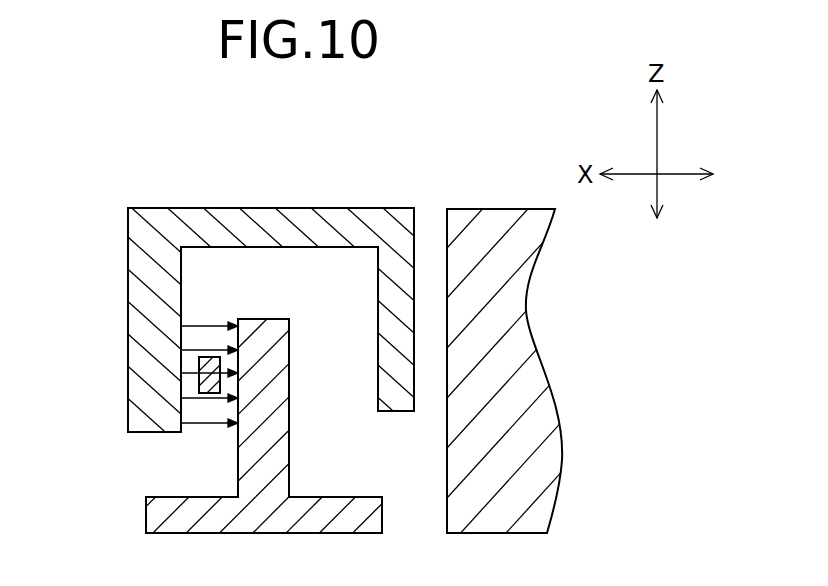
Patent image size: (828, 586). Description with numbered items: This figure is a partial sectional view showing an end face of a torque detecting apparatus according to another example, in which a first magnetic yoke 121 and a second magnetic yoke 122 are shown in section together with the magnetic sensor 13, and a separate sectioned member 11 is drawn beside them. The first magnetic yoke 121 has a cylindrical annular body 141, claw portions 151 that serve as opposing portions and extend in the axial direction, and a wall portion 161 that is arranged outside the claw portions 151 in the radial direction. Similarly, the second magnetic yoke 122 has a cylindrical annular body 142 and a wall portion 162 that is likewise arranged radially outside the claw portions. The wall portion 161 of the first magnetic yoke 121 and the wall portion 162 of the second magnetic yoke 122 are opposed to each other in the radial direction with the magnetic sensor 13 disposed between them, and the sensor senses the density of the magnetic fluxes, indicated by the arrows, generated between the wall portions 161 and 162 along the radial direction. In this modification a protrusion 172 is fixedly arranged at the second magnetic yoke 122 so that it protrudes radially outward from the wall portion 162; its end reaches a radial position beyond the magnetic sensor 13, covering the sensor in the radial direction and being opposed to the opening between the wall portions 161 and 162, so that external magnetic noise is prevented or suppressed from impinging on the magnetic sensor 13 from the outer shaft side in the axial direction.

The housing 11 is at (508, 215).
The magnetic sensor 13 is at (196, 393).
The first magnetic yoke 121 is at (192, 207).
The second magnetic yoke 122 is at (272, 527).
The annular body 141 is at (292, 213).
The annular body 142 is at (368, 527).
The claw portion 151 is at (382, 304).
The wall portion 161 is at (135, 289).
The wall portion 162 is at (283, 454).
The protrusion 172 is at (170, 527).